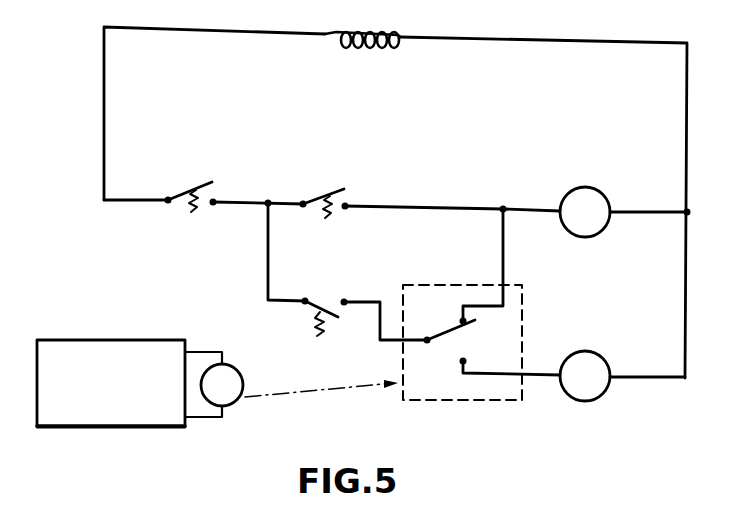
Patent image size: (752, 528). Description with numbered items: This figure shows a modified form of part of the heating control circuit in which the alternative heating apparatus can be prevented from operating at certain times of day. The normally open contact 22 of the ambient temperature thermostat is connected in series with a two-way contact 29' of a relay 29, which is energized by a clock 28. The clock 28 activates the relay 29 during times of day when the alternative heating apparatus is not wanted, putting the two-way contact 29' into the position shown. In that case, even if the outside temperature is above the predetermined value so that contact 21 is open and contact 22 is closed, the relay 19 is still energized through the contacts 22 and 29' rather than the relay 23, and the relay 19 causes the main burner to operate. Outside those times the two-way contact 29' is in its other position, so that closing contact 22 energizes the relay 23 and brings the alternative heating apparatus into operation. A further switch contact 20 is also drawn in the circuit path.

The relay 19 is at (568, 195).
The switch 20 is at (190, 179).
The contact 21 is at (321, 180).
The normally open contact 22 is at (313, 297).
The relay 23 is at (590, 401).
The clock 28 is at (108, 340).
The relay 29 is at (291, 381).
The two-way contact 29' is at (462, 367).